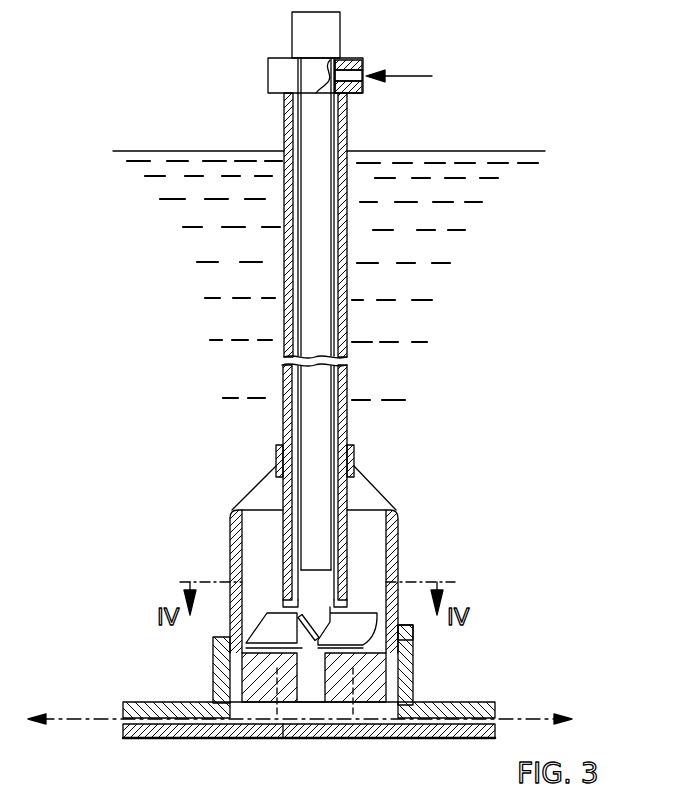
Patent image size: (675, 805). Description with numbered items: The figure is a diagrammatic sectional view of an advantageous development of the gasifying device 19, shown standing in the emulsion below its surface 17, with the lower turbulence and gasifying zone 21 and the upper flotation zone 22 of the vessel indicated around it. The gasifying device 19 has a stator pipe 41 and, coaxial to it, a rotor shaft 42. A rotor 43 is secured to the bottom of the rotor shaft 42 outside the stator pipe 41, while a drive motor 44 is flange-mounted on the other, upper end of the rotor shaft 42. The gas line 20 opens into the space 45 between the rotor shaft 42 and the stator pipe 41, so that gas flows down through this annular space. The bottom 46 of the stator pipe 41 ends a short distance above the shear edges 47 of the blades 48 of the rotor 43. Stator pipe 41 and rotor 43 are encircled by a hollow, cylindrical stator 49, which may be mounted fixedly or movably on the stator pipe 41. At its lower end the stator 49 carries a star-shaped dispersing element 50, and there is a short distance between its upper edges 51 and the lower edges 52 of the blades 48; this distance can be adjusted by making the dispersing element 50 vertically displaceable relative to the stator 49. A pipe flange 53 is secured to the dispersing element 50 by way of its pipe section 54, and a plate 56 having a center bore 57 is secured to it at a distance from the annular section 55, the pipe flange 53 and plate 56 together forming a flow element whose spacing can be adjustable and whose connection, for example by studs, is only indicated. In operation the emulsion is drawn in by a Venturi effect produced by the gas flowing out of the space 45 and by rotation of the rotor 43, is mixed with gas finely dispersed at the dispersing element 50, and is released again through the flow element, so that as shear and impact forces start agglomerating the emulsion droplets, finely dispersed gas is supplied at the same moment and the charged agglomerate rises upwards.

The surface 17 is at (160, 150).
The gasifying device 19 is at (256, 426).
The gas line 20 is at (413, 79).
The turbulence and gasifying zone 21 is at (168, 564).
The flotation zone 22 is at (178, 257).
The stator pipe 41 is at (347, 378).
The rotor shaft 42 is at (329, 266).
The rotor 43 is at (266, 612).
The drive motor 44 is at (333, 42).
The space 45 is at (347, 321).
The bottom 46 is at (343, 608).
The shear edges 47 is at (378, 614).
The blades 48 is at (400, 640).
The stator 49 is at (397, 538).
The dispersing element 50 is at (240, 682).
The upper edges 51 is at (362, 652).
The lower edges 52 is at (300, 655).
The pipe flange 53 is at (413, 707).
The pipe section 54 is at (405, 668).
The annular section 55 is at (485, 708).
The plate 56 is at (135, 728).
The center bore 57 is at (284, 730).